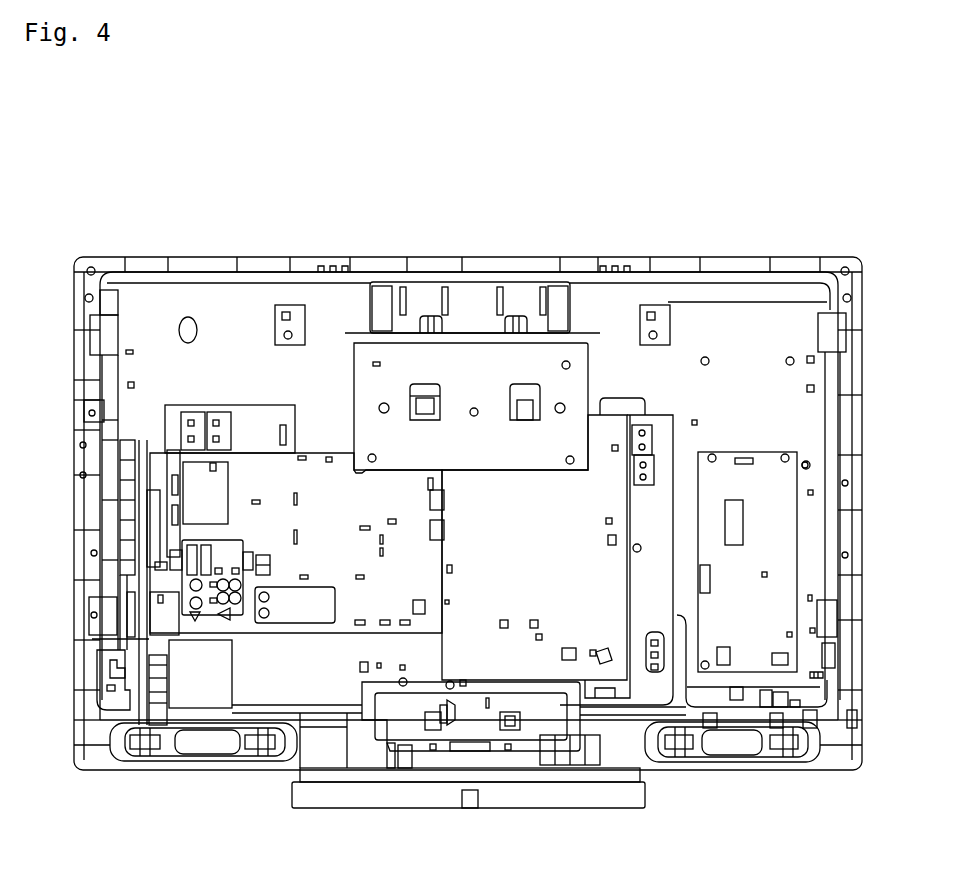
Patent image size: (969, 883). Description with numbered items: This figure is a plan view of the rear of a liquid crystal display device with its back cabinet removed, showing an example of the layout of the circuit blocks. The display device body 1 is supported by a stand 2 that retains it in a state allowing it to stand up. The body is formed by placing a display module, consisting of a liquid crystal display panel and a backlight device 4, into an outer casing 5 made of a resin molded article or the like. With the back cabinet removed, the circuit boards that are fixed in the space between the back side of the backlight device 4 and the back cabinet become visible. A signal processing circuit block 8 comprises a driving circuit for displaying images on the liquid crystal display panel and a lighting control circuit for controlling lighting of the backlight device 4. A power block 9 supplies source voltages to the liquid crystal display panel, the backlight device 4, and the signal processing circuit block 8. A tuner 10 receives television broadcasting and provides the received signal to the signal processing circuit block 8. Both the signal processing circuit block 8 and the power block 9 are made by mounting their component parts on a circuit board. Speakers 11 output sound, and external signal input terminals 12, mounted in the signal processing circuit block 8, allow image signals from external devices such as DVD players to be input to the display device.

The display device body 1 is at (150, 255).
The stand 2 is at (580, 805).
The backlight device 4 is at (737, 315).
The outer casing 5 is at (268, 257).
The signal processing circuit block 8 is at (316, 468).
The power block 9 is at (608, 430).
The tuner 10 is at (302, 615).
The speaker 11 is at (163, 755).
The external signal input terminals 12 is at (180, 575).